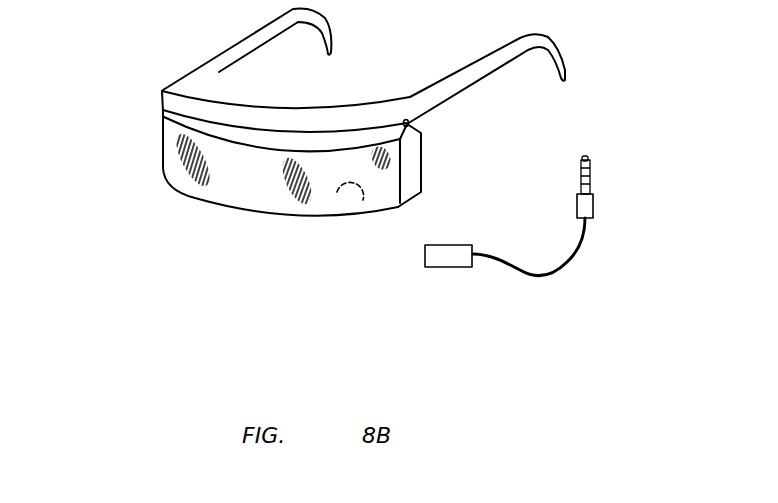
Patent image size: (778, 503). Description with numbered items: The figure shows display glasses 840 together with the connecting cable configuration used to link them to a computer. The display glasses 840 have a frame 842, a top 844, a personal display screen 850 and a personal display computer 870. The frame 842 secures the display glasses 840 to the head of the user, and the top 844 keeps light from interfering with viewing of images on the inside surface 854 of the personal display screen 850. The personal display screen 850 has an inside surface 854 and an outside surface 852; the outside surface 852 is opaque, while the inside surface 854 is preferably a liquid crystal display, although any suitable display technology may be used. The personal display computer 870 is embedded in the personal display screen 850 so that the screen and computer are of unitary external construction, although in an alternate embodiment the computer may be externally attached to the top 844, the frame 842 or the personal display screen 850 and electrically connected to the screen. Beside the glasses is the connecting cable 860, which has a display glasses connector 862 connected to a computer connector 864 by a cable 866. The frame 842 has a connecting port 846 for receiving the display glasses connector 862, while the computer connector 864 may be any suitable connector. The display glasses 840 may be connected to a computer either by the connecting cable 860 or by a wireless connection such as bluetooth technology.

The display glasses 840 is at (126, 54).
The frame 842 is at (440, 108).
The top 844 is at (273, 104).
The connecting port 846 is at (405, 120).
The personal display screen 850 is at (186, 202).
The outside surface 852 is at (260, 190).
The inside surface 854 is at (362, 203).
The connecting cable 860 is at (490, 328).
The display glasses connector 862 is at (597, 205).
The computer connector 864 is at (443, 268).
The cable 866 is at (543, 277).
The personal display computer 870 is at (422, 163).